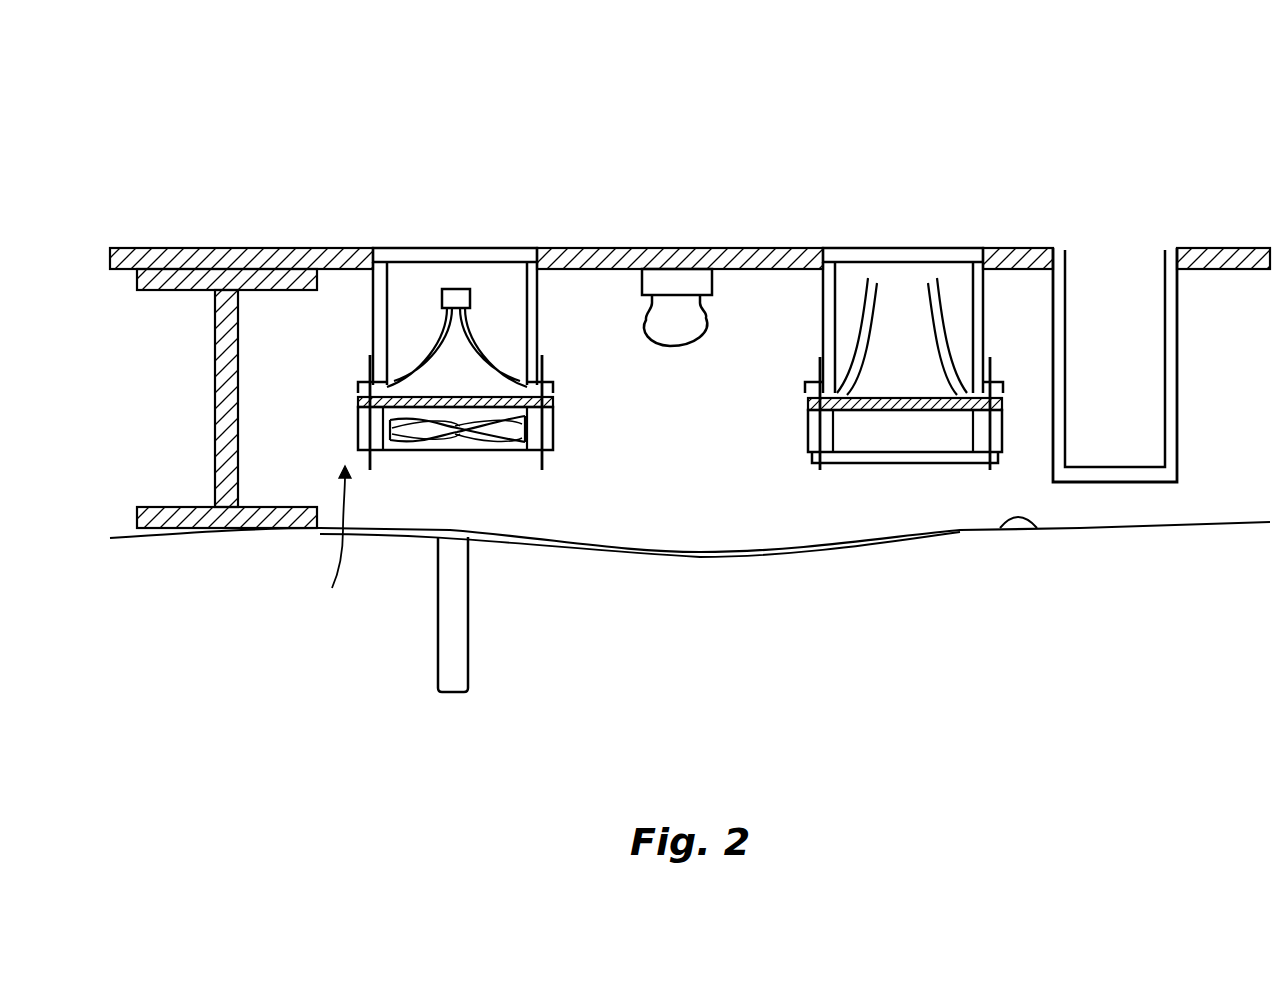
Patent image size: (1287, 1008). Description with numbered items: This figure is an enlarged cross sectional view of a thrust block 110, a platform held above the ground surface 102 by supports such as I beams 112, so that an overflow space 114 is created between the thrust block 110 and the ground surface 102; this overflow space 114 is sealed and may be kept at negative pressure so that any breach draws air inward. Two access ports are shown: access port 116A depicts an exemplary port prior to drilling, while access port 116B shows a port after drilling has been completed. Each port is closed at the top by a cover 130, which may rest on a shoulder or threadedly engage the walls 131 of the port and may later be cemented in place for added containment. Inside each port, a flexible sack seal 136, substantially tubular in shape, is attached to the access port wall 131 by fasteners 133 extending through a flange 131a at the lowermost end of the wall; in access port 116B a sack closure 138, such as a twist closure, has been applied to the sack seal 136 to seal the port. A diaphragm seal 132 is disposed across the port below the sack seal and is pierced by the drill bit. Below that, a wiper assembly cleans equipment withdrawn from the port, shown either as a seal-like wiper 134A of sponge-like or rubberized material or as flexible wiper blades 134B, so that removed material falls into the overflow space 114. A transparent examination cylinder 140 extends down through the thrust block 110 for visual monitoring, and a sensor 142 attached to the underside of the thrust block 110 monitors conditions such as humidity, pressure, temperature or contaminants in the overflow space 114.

The ground surface 102 is at (1037, 530).
The thrust block 110 is at (192, 248).
The I beams 112 is at (212, 322).
The overflow space 114 is at (333, 544).
The access port 116A is at (904, 377).
The access port 116B is at (491, 324).
The cover 130 is at (400, 252).
The access port wall 131 is at (537, 303).
The flange 131a is at (557, 387).
The diaphragm seal 132 is at (890, 397).
The fasteners 133 is at (368, 364).
The seal-like wiper 134A is at (863, 463).
The wiper blades 134B is at (473, 445).
The flexible sack seal 136 is at (483, 327).
The sack closure 138 is at (458, 289).
The examination cylinder 140 is at (1177, 378).
The sensor 142 is at (675, 330).